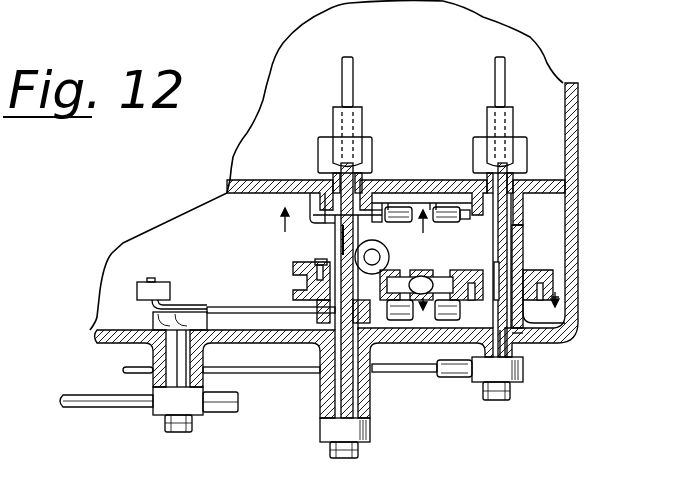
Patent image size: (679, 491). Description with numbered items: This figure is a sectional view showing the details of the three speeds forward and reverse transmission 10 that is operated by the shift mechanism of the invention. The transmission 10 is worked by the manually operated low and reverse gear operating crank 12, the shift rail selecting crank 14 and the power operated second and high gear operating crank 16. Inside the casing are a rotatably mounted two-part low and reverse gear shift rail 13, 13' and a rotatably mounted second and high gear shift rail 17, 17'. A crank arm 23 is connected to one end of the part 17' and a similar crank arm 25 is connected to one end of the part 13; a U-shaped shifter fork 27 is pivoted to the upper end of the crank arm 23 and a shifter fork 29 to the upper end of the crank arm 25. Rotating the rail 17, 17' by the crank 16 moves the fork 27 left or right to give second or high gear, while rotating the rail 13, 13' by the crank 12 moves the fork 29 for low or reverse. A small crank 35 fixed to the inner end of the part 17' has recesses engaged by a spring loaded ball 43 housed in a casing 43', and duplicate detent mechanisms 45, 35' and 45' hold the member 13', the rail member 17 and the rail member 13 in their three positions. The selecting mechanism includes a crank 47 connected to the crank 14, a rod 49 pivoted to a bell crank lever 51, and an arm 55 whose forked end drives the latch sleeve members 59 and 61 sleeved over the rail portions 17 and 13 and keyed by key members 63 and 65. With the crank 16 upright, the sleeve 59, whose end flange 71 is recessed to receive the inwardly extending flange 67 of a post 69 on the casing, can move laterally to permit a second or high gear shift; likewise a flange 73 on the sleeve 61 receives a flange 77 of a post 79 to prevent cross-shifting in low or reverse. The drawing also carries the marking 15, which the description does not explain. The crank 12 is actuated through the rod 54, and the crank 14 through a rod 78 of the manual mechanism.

The transmission 10 is at (590, 123).
The low and reverse gear operating crank 12 is at (467, 373).
The low and reverse gear shift rail part 13 is at (523, 260).
The low and reverse gear shift rail part 13' is at (542, 359).
The shift rail selecting crank 14 is at (213, 408).
The fluid passage (flow arrows) 15 is at (473, 315).
The second and high gear operating crank 16 is at (327, 430).
The second and high gear shift rail part 17 is at (375, 300).
The second and high gear shift rail part 17' is at (365, 159).
The crank arm 23 is at (320, 153).
The crank arm 25 is at (520, 147).
The U-shaped shifter fork 27 is at (342, 80).
The shifter fork 29 is at (503, 85).
The small crank 35 is at (397, 172).
The detent mechanism 35' is at (422, 374).
The spring loaded ball 43 is at (414, 221).
The casing 43' is at (425, 183).
The detent mechanism 45 is at (382, 333).
The detent mechanism 45' is at (460, 229).
The crank 47 is at (170, 290).
The rod 49 is at (213, 308).
The bell crank lever 51 is at (377, 254).
The rod 54 is at (278, 370).
The arm 55 is at (423, 270).
The sleeve member 59 is at (305, 282).
The sleeve member 61 is at (537, 288).
The key member 63 is at (343, 237).
The key member 65 is at (507, 267).
The inwardly extending flange 67 is at (327, 223).
The post 69 is at (313, 217).
The end flange 71 is at (320, 260).
The flange 73 is at (513, 333).
The flange 77 is at (573, 285).
The rod 78 is at (105, 402).
The post 79 is at (533, 323).